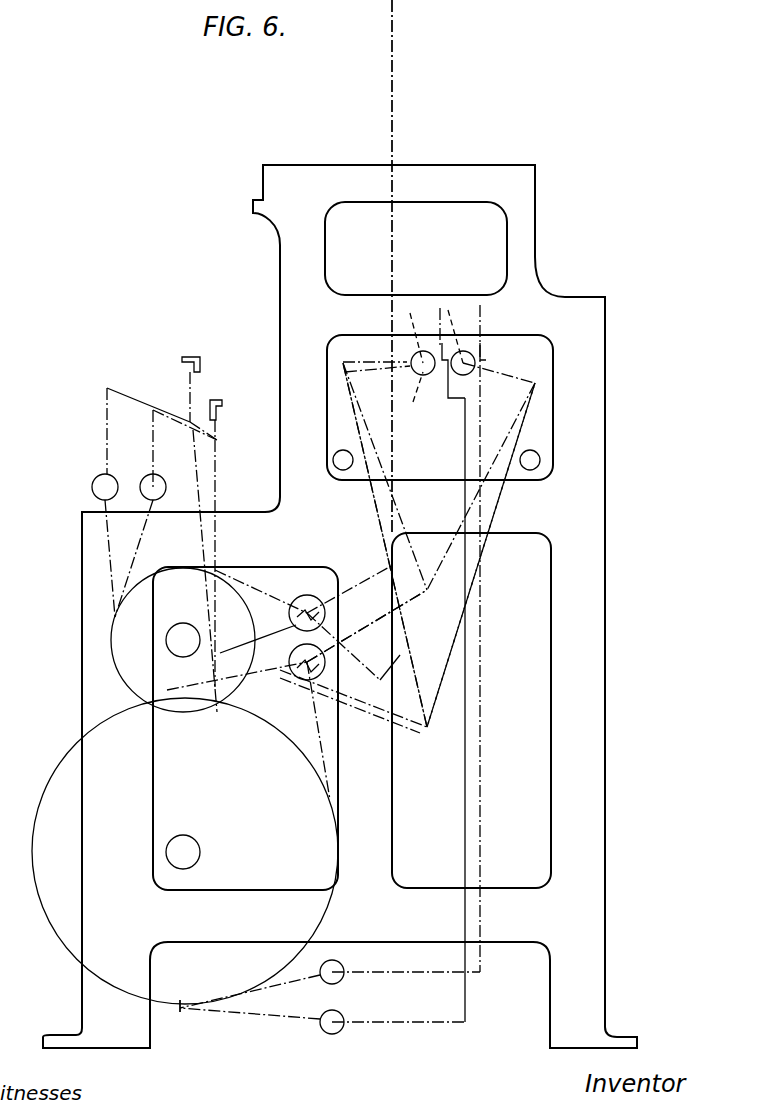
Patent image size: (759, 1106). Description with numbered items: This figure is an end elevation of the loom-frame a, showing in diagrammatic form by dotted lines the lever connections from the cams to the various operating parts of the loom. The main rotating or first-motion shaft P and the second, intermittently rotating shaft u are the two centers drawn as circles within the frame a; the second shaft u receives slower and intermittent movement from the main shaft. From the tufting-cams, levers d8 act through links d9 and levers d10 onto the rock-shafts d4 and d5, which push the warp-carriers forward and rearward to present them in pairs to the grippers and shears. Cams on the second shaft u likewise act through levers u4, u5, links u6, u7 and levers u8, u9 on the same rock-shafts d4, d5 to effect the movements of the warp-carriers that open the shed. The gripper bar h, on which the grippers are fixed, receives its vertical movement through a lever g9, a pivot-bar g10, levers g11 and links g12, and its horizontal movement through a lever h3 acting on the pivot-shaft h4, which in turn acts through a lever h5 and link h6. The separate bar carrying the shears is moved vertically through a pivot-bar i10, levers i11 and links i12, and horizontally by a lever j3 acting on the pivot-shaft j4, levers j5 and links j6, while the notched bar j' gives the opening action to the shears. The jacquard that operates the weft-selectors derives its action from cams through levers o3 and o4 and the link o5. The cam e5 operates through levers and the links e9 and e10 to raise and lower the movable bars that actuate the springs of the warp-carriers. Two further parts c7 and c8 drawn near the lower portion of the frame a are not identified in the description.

The frame or end standard a is at (340, 606).
The main rotating shaft P is at (183, 640).
The second-motion shaft u is at (185, 851).
The pivot-shaft j4 is at (95, 470).
The pivot-shaft h4 is at (157, 478).
The notched bar j' is at (178, 389).
The gripper bar h is at (222, 403).
The links g12 is at (215, 555).
The links i12 is at (197, 571).
The levers j5 is at (110, 416).
The links j6 is at (166, 422).
The lever h5 is at (139, 448).
The link h6 is at (143, 431).
The lever j3 is at (100, 558).
The lever h3 is at (132, 558).
The rock-shaft d5 is at (448, 370).
The levers d10 is at (363, 352).
The rock-shaft d4 is at (410, 397).
The lever u8 is at (376, 377).
The lever u9 is at (500, 385).
The links d9 is at (510, 443).
The link u7 is at (497, 520).
The link u6 is at (382, 472).
The link e10 is at (425, 638).
The link e9 is at (398, 710).
The pivot-bar i10 is at (303, 595).
The lever g9 is at (300, 680).
The levers i11 is at (246, 643).
The levers d8 is at (360, 575).
The pivot-bar g10 is at (367, 626).
The levers g11 is at (235, 700).
The lever u4 is at (353, 731).
The lever u5 is at (345, 723).
The lever o3 is at (370, 738).
The lever o4 is at (481, 555).
The link o5 is at (392, 118).
The roller c8 is at (388, 982).
The roller c7 is at (285, 1018).
The cam e5 is at (60, 965).